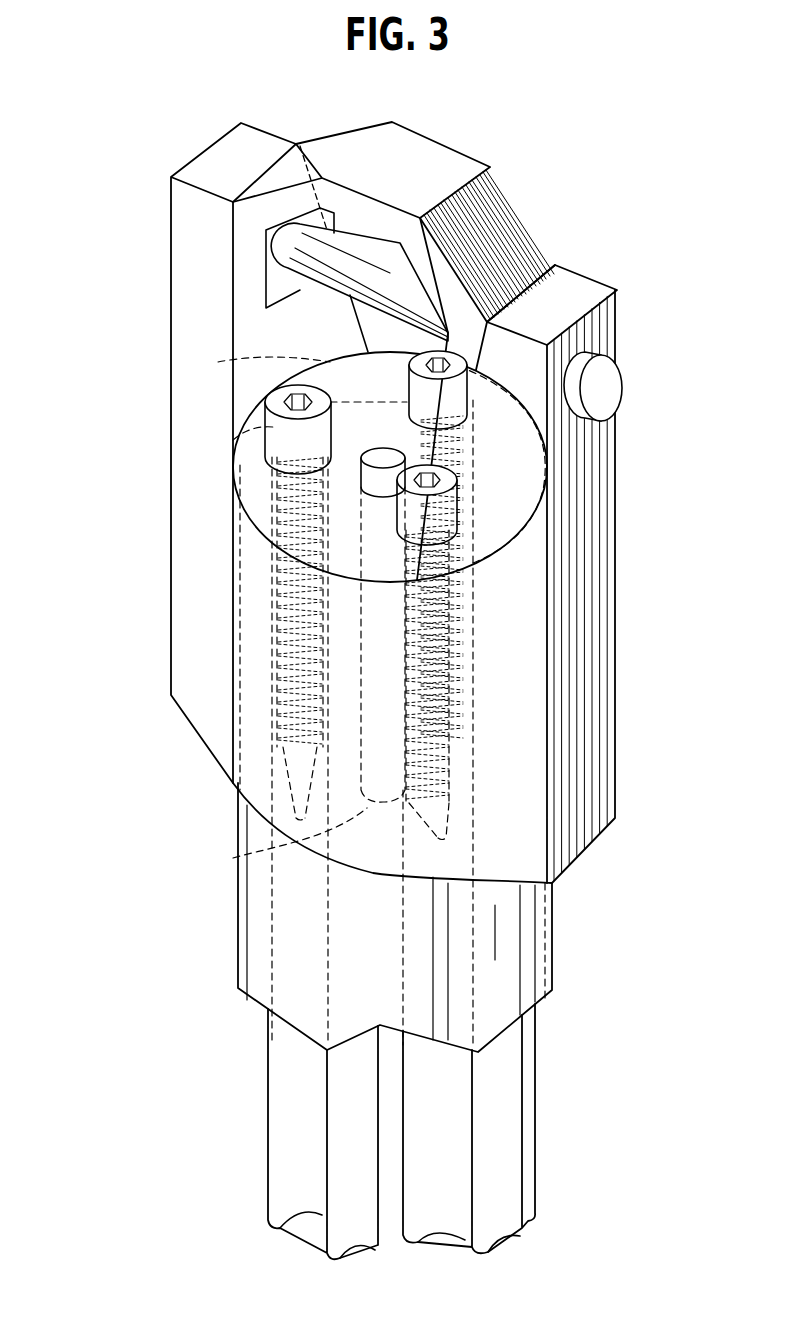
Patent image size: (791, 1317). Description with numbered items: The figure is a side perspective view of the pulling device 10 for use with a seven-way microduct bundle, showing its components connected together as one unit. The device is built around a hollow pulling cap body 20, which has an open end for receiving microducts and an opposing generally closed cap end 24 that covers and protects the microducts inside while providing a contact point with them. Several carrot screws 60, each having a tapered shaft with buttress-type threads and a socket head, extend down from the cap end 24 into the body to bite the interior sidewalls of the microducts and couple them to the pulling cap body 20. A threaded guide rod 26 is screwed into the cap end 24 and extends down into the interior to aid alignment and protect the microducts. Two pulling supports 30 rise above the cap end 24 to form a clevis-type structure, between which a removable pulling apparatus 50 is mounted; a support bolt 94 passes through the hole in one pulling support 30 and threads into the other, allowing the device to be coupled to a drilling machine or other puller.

The pulling device 10 is at (103, 68).
The pulling cap body 20 is at (525, 757).
The cap end 24 is at (328, 372).
The guide rod 26 is at (265, 840).
The pulling support 30 is at (227, 152).
The removable pulling apparatus 50 is at (453, 172).
The carrot screw 60 is at (268, 432).
The support bolt 94 is at (612, 378).